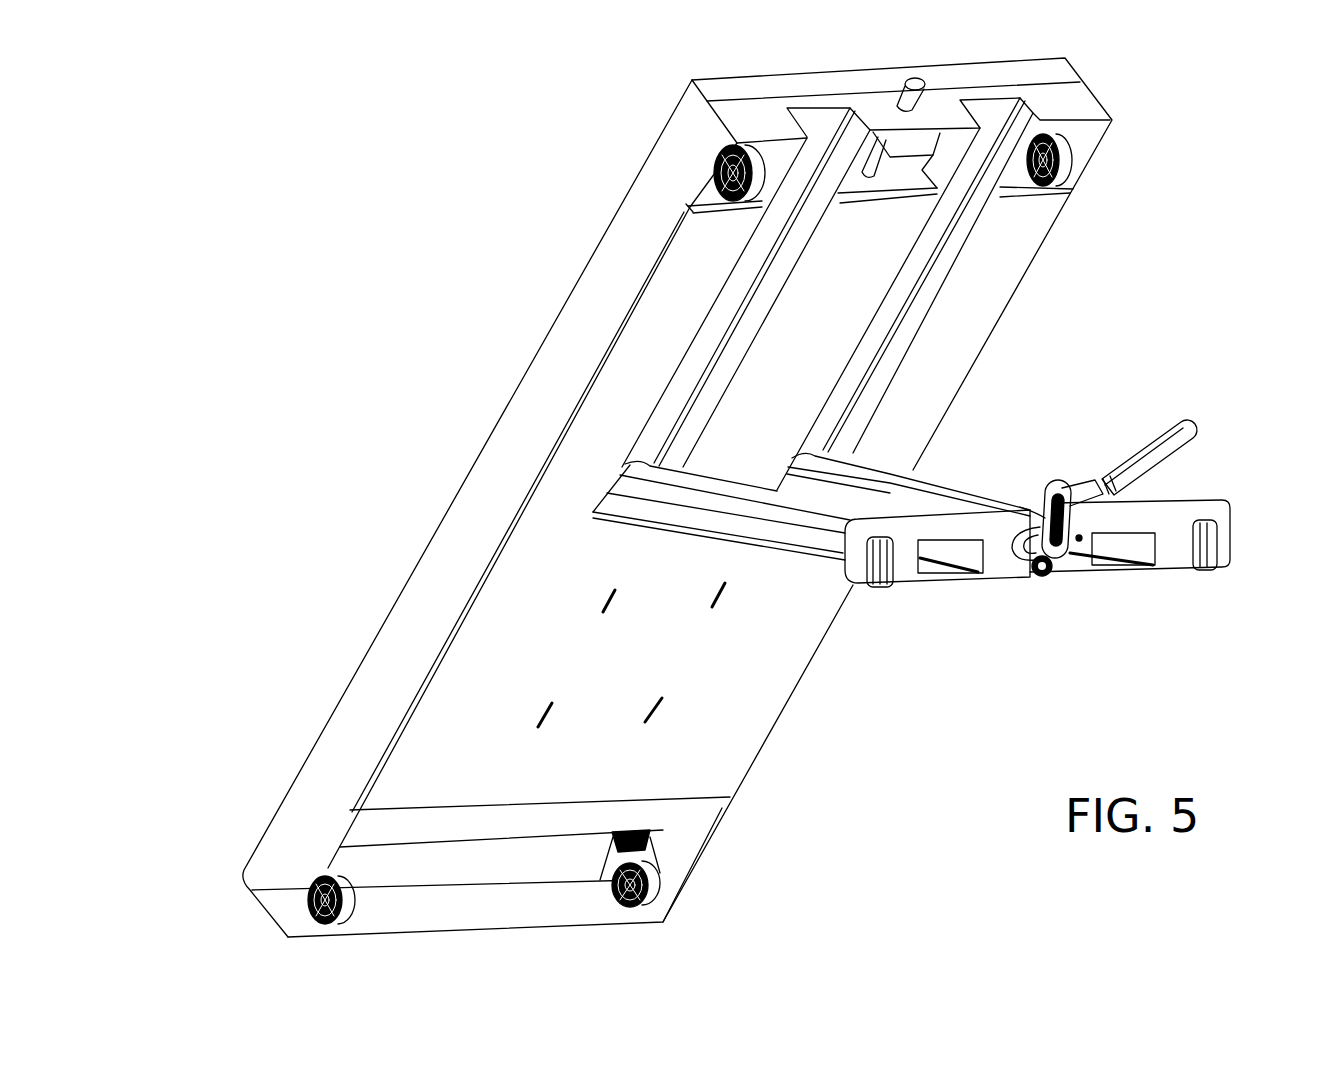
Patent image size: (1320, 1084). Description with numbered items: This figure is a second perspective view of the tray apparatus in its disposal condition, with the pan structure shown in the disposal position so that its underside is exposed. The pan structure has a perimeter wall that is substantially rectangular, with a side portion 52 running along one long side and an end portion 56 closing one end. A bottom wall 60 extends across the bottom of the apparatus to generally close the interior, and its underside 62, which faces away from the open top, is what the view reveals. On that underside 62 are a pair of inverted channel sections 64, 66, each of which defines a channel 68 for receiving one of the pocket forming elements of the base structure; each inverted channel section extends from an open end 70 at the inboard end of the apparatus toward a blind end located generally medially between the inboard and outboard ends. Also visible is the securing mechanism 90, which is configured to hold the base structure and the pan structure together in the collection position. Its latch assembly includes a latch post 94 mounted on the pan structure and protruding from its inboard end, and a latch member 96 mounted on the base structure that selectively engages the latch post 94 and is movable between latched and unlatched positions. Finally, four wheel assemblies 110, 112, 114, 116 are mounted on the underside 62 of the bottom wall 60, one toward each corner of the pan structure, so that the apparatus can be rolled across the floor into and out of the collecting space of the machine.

The side portion 52 is at (418, 608).
The end portion 56 is at (573, 927).
The bottom wall 60 is at (797, 632).
The underside 62 is at (750, 706).
The inverted channel section 64 is at (681, 387).
The inverted channel section 66 is at (867, 352).
The channel 68 is at (937, 266).
The open end 70 is at (1040, 112).
The securing mechanism 90 is at (1122, 407).
The latch post 94 is at (898, 76).
The latch member 96 is at (1142, 472).
The wheel assembly 110 is at (318, 888).
The wheel assembly 112 is at (650, 873).
The wheel assembly 114 is at (717, 172).
The wheel assembly 116 is at (1060, 157).